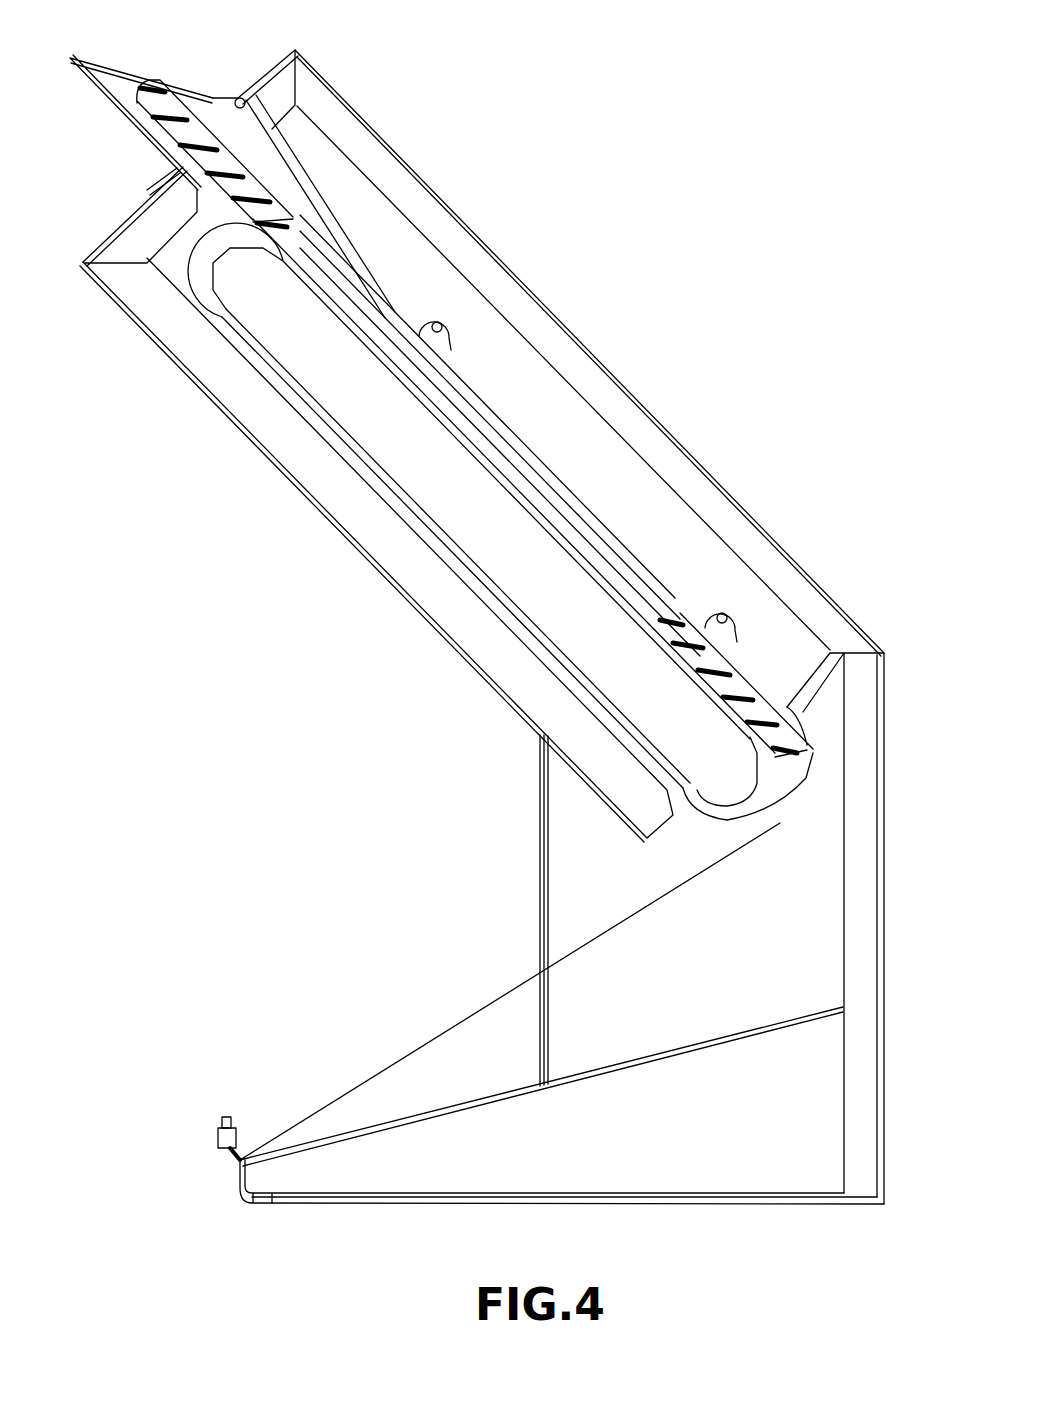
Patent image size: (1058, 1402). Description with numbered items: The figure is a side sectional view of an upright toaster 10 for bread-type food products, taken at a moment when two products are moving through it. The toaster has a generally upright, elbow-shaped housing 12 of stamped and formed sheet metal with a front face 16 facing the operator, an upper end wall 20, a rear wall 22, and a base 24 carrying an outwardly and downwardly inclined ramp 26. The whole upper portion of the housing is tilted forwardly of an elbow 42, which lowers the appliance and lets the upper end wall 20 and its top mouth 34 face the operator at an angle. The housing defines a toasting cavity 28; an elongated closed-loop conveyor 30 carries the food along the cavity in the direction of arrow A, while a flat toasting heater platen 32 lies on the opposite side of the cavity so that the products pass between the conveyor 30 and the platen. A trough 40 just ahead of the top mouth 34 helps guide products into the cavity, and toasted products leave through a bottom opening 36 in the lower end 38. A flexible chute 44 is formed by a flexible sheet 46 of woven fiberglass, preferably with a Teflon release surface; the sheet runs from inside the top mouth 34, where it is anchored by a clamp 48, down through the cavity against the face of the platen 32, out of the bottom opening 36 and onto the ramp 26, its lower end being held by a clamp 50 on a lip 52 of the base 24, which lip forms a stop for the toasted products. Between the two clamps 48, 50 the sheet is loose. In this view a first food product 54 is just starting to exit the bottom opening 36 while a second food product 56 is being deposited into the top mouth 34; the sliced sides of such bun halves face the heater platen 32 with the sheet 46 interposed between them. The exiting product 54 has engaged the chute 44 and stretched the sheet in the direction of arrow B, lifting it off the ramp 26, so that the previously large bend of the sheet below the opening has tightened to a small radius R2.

The toaster 10 is at (757, 338).
The housing 12 is at (778, 529).
The front face 16 is at (340, 522).
The upper end wall 20 is at (122, 222).
The rear wall 22 is at (382, 137).
The base 24 is at (605, 1205).
The ramp 26 is at (520, 1090).
The toasting cavity 28 is at (380, 593).
The conveyor 30 is at (440, 572).
The toasting heater platen 32 is at (632, 545).
The top mouth 34 is at (240, 136).
The bottom opening 36 is at (812, 740).
The lower end 38 is at (806, 684).
The trough 40 is at (123, 117).
The elbow 42 is at (884, 653).
The flexible chute 44 is at (773, 827).
The flexible sheet 46 is at (387, 323).
The clamp 48 is at (297, 50).
The clamp 50 is at (218, 1140).
The lip 52 is at (236, 1160).
The first food product 54 is at (730, 677).
The second food product 56 is at (305, 128).
The conveying direction arrow A is at (510, 463).
The sheet stretching direction arrow B is at (690, 853).
The small radius R2 is at (813, 793).